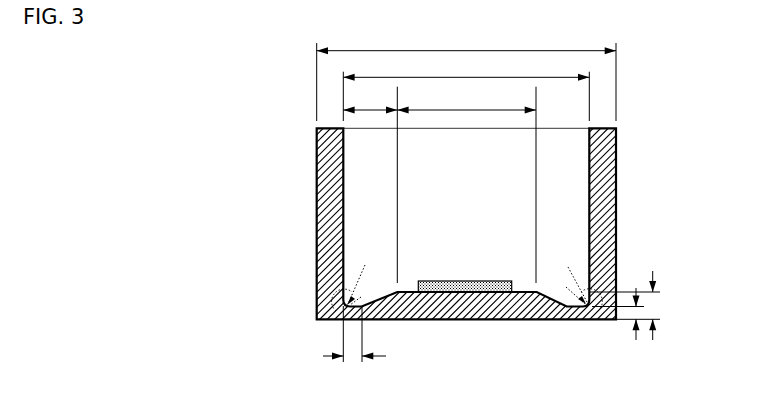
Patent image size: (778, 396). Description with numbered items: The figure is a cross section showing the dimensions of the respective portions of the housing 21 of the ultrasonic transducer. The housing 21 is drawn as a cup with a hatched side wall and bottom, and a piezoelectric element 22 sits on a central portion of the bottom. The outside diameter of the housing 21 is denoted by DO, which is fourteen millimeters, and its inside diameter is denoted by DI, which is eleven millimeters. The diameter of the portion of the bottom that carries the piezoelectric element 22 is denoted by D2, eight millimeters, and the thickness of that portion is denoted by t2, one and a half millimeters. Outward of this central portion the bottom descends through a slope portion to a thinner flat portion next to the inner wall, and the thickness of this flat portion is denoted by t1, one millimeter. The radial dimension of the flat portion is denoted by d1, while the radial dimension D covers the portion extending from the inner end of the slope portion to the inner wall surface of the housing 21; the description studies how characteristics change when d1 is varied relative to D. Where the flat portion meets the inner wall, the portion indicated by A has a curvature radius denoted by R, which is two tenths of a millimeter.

The housing 21 is at (612, 197).
The piezoelectric element 22 is at (462, 281).
The outside diameter DO is at (466, 73).
The inside diameter DI is at (466, 86).
The radial dimension of portion from slope inner end to inner wall D is at (370, 99).
The diameter of bottom portion provided with piezoelectric element D2 is at (466, 184).
The radial dimension of flat portion d1 is at (354, 344).
The thickness of flat portion t1 is at (626, 323).
The thickness of bottom portion provided with piezoelectric element t2 is at (625, 315).
The portion indicated by A is at (467, 275).
The curvature radius R is at (467, 291).